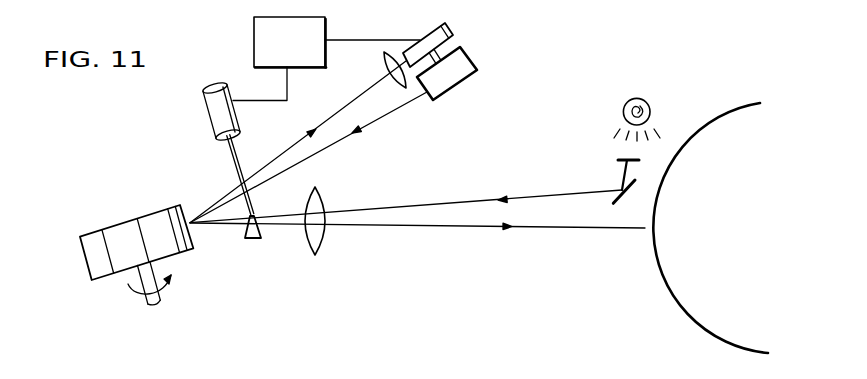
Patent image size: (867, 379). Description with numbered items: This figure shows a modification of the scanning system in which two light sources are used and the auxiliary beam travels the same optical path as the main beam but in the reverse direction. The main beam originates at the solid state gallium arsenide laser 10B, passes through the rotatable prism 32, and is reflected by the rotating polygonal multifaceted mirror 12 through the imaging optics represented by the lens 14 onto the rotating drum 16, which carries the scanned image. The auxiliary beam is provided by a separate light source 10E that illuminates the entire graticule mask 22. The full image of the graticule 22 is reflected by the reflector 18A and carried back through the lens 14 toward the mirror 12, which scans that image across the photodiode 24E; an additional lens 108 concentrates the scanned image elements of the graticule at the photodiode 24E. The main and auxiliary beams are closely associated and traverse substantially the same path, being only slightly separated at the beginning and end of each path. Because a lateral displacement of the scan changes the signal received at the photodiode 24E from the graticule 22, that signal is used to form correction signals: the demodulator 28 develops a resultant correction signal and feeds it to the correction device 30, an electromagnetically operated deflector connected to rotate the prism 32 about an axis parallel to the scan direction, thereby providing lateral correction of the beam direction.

The solid state gallium arsenide laser 10B is at (474, 66).
The light source 10E is at (645, 101).
The lens 108 is at (387, 68).
The rotating polygonal multifaceted mirror 12 is at (118, 224).
The lens 14 is at (318, 240).
The rotating drum 16 is at (690, 327).
The reflector 18A is at (637, 181).
The graticule mask 22 is at (624, 165).
The photodiode 24E is at (450, 25).
The demodulator 28 is at (256, 33).
The correction device 30 is at (215, 118).
The prism 32 is at (253, 240).